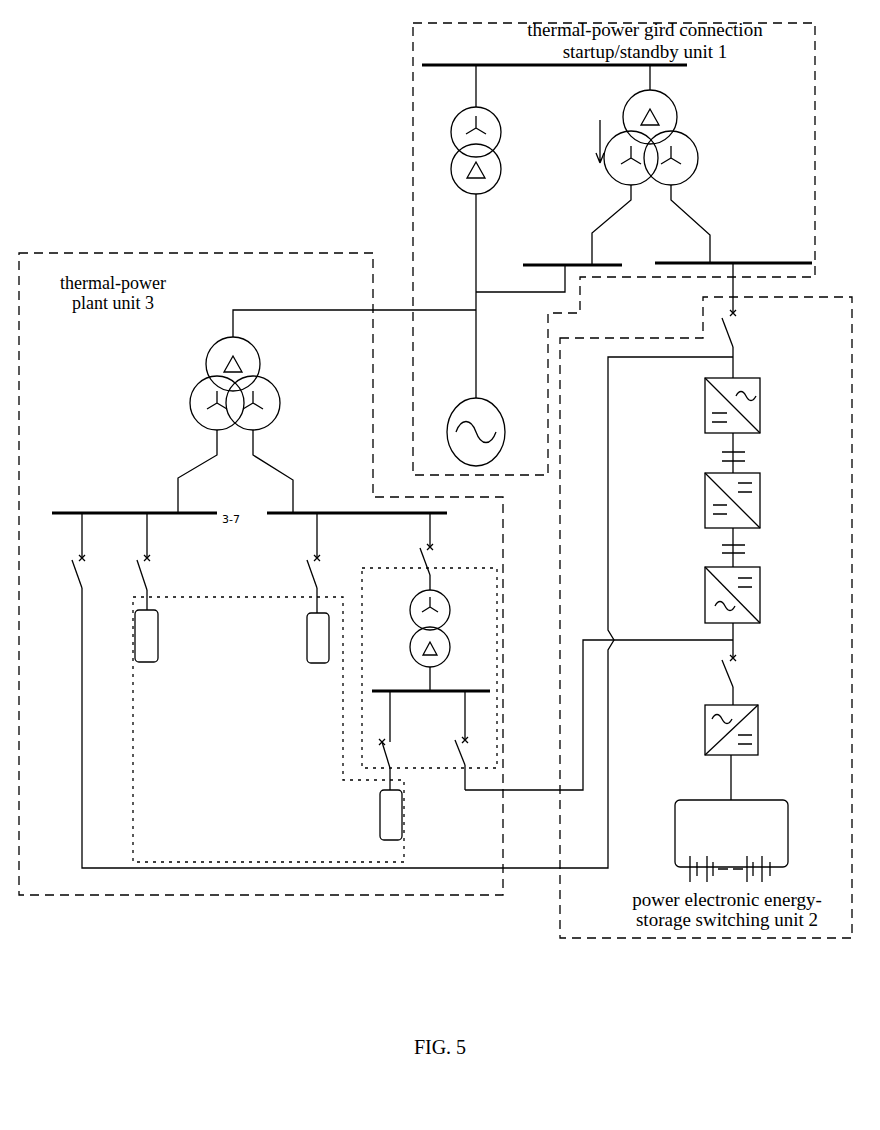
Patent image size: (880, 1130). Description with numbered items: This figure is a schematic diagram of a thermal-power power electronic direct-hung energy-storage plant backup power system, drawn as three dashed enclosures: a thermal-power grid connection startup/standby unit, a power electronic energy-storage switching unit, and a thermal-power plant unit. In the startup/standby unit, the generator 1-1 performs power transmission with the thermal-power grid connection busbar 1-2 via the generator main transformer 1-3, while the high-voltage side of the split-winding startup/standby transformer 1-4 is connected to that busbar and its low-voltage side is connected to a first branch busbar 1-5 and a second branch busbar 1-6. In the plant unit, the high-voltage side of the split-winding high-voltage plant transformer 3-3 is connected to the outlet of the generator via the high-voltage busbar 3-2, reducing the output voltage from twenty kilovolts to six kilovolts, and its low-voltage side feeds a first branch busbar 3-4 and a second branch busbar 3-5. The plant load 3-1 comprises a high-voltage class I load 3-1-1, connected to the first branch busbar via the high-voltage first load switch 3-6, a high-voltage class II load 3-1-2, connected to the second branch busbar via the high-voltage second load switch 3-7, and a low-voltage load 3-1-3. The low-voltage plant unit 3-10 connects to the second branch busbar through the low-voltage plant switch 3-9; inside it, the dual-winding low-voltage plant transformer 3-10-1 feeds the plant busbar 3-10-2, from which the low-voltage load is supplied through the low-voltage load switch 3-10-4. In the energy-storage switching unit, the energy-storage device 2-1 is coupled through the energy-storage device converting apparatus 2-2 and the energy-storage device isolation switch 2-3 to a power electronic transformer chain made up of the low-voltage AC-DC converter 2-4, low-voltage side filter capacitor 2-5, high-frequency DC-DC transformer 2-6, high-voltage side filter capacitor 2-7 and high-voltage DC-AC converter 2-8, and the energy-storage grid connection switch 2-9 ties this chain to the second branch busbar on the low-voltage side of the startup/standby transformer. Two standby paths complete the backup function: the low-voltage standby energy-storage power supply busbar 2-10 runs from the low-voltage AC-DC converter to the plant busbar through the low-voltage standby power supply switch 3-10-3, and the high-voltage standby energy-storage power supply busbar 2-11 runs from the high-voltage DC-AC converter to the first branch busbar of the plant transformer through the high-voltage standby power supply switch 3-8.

The generator 1-1 is at (485, 395).
The thermal-power grid connection busbar 1-2 is at (450, 60).
The generator main transformer 1-3 is at (507, 142).
The split-winding startup/standby transformer 1-4 is at (678, 125).
The first branch busbar on the low-voltage side of the startup/standby transformer 1-5 is at (560, 260).
The second branch busbar on the low-voltage side of the startup/standby transformer 1-6 is at (737, 260).
The energy-storage device 2-1 is at (765, 792).
The energy-storage device converting apparatus 2-2 is at (763, 727).
The energy-storage device isolation switch 2-3 is at (747, 673).
The energy-storage PET low-voltage AC-DC converter 2-4 is at (765, 588).
The energy-storage PET low-voltage side filter capacitor 2-5 is at (715, 550).
The energy-storage PET high-frequency DC-DC transformer 2-6 is at (767, 488).
The energy-storage PET high-voltage side filter capacitor 2-7 is at (717, 452).
The energy-storage PET high-voltage DC-AC converter 2-8 is at (763, 397).
The energy-storage grid connection switch 2-9 is at (738, 332).
The low-voltage standby energy-storage power supply busbar 2-10 is at (688, 638).
The high-voltage standby energy-storage power supply busbar 2-11 is at (625, 362).
The plant load 3-1 is at (133, 745).
The thermal-power plant high-voltage class I load 3-1-1 is at (160, 628).
The thermal-power plant high-voltage class II load 3-1-2 is at (303, 630).
The thermal-power plant low-voltage load 3-1-3 is at (380, 812).
The high-voltage busbar of the high-voltage plant transformer 3-2 is at (283, 305).
The split-winding high-voltage plant transformer 3-3 is at (263, 367).
The first branch busbar on the low-voltage side of the high-voltage plant transforme 3-4 is at (143, 507).
The second branch busbar on the low-voltage side of the high-voltage plant transform 3-5 is at (330, 503).
The high-voltage first load switch 3-6 is at (157, 572).
The high-voltage second load switch 3-7 is at (323, 578).
The high-voltage standby power supply switch 3-8 is at (70, 562).
The low-voltage plant switch 3-9 is at (440, 557).
The low-voltage plant unit 3-10 is at (432, 770).
The dual-winding low-voltage plant transformer 3-10-1 is at (415, 590).
The plant busbar 3-10-2 is at (412, 690).
The low-voltage standby power supply switch 3-10-3 is at (465, 757).
The low-voltage load switch 3-10-4 is at (393, 753).